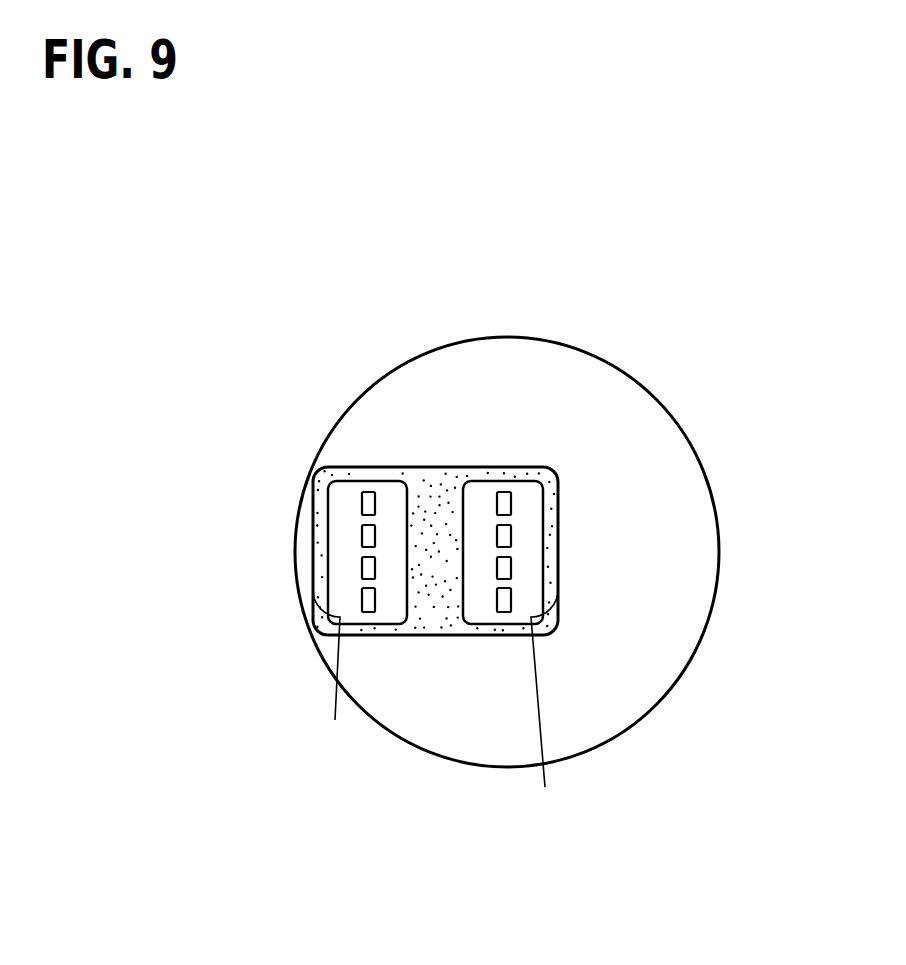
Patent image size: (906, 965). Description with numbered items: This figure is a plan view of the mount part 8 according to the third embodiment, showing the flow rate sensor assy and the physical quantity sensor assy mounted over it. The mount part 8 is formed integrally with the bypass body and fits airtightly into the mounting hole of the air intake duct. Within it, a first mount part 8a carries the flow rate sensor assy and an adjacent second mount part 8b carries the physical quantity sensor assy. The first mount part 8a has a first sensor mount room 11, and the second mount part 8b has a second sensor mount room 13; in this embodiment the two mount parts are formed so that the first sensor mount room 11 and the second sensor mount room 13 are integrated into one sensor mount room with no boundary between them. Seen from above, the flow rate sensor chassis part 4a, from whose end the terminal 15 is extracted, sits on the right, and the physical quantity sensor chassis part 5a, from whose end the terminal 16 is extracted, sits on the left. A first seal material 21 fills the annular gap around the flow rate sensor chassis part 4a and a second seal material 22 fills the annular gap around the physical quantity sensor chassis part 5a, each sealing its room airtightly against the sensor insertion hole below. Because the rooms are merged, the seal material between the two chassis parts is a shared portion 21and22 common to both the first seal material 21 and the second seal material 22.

The mount part 8 is at (652, 445).
The first mount part 8a is at (510, 468).
The second mount part 8b is at (368, 467).
The shared part of first and second seal materials 21and22 is at (437, 517).
The first seal material 21 is at (551, 550).
The second seal material 22 is at (322, 547).
The physical quantity sensor chassis part 5a is at (342, 575).
The flow rate sensor chassis part 4a is at (530, 568).
The terminal 16 is at (372, 537).
The terminal 15 is at (503, 535).
The second sensor mount room 13 is at (330, 674).
The first sensor mount room 11 is at (544, 707).